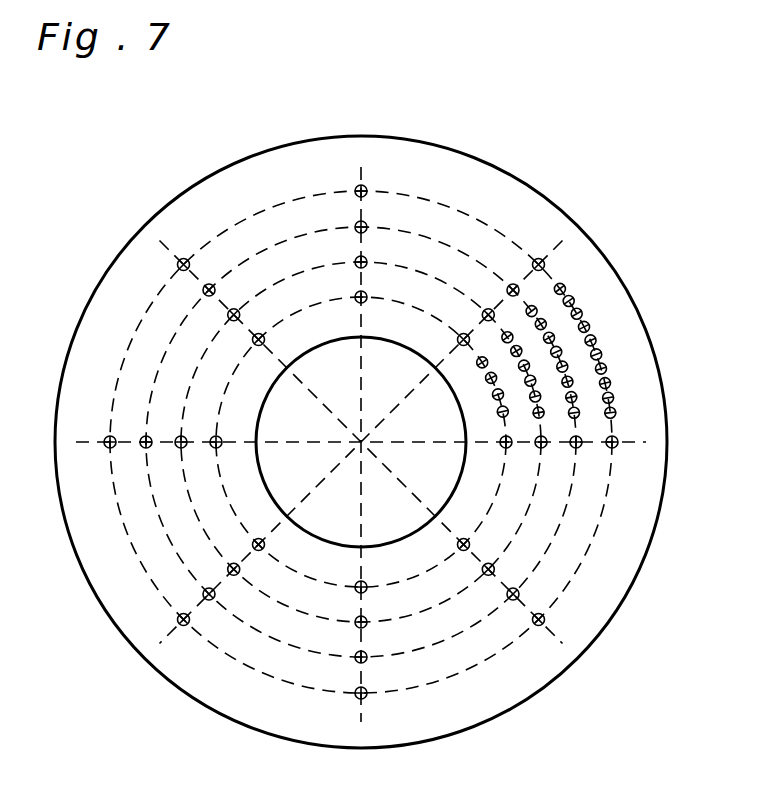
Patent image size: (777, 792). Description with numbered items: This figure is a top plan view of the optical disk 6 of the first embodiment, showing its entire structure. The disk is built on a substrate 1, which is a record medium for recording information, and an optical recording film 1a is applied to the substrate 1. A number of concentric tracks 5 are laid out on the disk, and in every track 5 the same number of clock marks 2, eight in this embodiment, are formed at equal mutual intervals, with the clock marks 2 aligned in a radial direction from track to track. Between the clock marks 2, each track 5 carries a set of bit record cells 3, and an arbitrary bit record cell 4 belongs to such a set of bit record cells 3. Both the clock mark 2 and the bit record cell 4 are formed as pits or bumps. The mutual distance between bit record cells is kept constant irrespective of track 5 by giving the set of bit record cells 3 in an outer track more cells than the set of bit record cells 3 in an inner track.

The substrate 1 is at (570, 218).
The optical recording film 1a is at (503, 198).
The clock mark 2 is at (548, 263).
The set of bit record cells 3 is at (568, 272).
The bit record cell 4 is at (615, 397).
The track 5 is at (423, 235).
The optical disk 6 is at (100, 203).